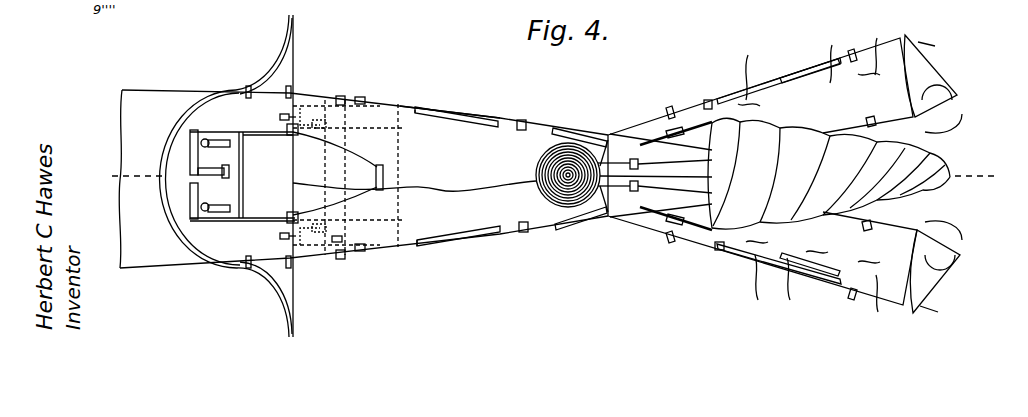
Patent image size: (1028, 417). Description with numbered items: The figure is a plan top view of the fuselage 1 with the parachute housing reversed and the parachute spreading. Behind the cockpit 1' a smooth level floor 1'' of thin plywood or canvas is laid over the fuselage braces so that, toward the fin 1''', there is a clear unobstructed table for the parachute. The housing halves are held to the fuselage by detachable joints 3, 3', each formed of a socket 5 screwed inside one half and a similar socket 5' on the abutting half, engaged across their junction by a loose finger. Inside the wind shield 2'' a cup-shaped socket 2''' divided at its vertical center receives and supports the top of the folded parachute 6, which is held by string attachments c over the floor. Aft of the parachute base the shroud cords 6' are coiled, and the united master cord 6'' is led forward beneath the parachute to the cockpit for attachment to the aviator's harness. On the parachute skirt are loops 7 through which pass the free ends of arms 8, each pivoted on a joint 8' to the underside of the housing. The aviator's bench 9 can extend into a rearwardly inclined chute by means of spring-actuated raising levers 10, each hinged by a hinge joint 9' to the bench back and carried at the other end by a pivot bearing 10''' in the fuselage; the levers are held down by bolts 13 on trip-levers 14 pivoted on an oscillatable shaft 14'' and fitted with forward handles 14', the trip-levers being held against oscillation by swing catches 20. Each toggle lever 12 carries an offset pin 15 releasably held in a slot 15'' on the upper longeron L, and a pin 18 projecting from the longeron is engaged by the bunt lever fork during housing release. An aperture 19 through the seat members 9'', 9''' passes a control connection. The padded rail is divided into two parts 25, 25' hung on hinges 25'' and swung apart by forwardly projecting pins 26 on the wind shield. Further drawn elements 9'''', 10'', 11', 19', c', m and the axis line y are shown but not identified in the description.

The fuselage 1 is at (363, 179).
The cockpit 1' is at (198, 169).
The floor 1'' is at (450, 130).
The fin 1''' is at (268, 168).
The wind shield 2'' is at (932, 174).
The cup-shaped socket 2''' is at (785, 171).
The detachable joint 3 is at (595, 172).
The detachable joint 3' is at (669, 248).
The socket 5 is at (737, 171).
The socket 5' is at (655, 189).
The parachute 6 is at (835, 173).
The shroud cords 6' is at (617, 178).
The master cord 6'' is at (414, 177).
The loop 7 is at (705, 100).
The arm 8 is at (681, 157).
The joint 8' is at (663, 179).
The aviator's bench 9 is at (242, 176).
The hinge joint 9' is at (288, 173).
The seat member 9'' is at (255, 175).
The seat member 9''' is at (194, 179).
The frame 9'''' is at (204, 186).
The raising lever 10 is at (359, 175).
The venturi 10'' is at (335, 173).
The pivot bearing 10''' is at (417, 175).
The bracket 11' is at (403, 177).
The toggle lever 12 is at (800, 72).
The bolt 13 is at (349, 122).
The trip-lever 14 is at (375, 173).
The handle 14' is at (308, 184).
The oscillatable shaft 14'' is at (325, 197).
The offset pin 15 is at (817, 167).
The slot 15'' is at (457, 171).
The pin 18 is at (568, 130).
The aperture 19 is at (220, 153).
The arm 19' is at (225, 219).
The swing catch 20 is at (280, 117).
The padded rail part 25 is at (264, 176).
The padded rail part 25' is at (282, 299).
The hinge 25'' is at (271, 175).
The projecting pin 26 is at (949, 98).
The string attachment c is at (813, 174).
The cable c' is at (814, 169).
The pivot m is at (202, 185).
The upper longeron L is at (425, 106).
The axis y is at (553, 180).